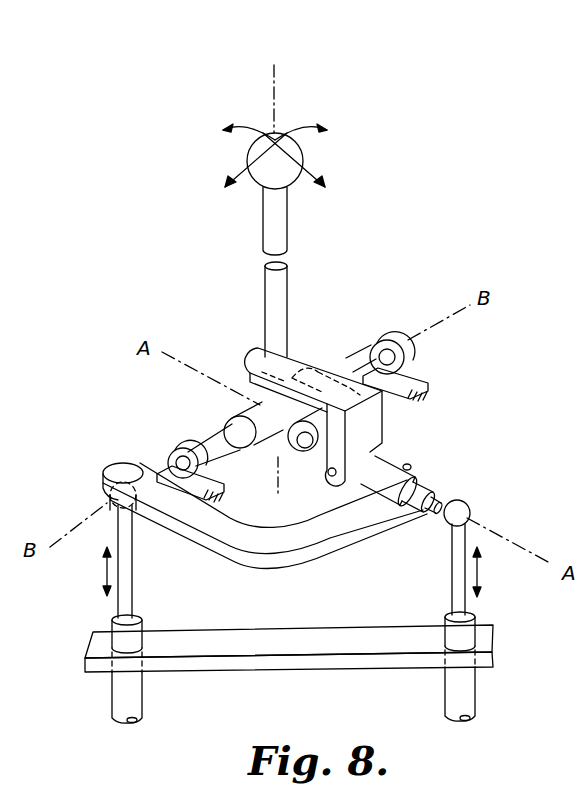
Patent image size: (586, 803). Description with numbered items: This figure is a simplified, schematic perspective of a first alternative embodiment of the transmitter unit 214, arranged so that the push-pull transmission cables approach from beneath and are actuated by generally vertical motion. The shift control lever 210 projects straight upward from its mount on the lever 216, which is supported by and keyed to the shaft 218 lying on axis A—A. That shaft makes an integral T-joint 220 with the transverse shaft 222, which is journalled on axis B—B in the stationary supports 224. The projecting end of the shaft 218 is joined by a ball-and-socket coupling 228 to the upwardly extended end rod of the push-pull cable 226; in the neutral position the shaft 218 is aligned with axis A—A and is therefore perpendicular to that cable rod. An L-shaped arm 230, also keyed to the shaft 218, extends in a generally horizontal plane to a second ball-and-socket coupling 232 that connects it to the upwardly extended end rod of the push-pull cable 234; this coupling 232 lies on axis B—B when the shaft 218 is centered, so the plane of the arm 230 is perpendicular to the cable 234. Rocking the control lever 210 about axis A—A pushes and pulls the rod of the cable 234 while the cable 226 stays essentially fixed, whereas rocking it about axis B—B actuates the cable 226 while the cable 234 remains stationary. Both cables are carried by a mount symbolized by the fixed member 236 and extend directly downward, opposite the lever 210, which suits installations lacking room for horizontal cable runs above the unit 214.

The shift control lever 210 is at (280, 228).
The transmitter unit 214 is at (229, 356).
The lever 216 is at (312, 358).
The shaft 218 is at (377, 460).
The T-joint 220 is at (303, 460).
The transverse shaft 222 is at (217, 438).
The stationary supports 224 is at (193, 446).
The push-pull cable 226 is at (467, 635).
The ball-and-socket coupling 228 is at (467, 500).
The L-shaped arm 230 is at (312, 552).
The ball-and-socket coupling 232 is at (113, 513).
The push-pull cable 234 is at (130, 640).
The fixed member 236 is at (270, 640).